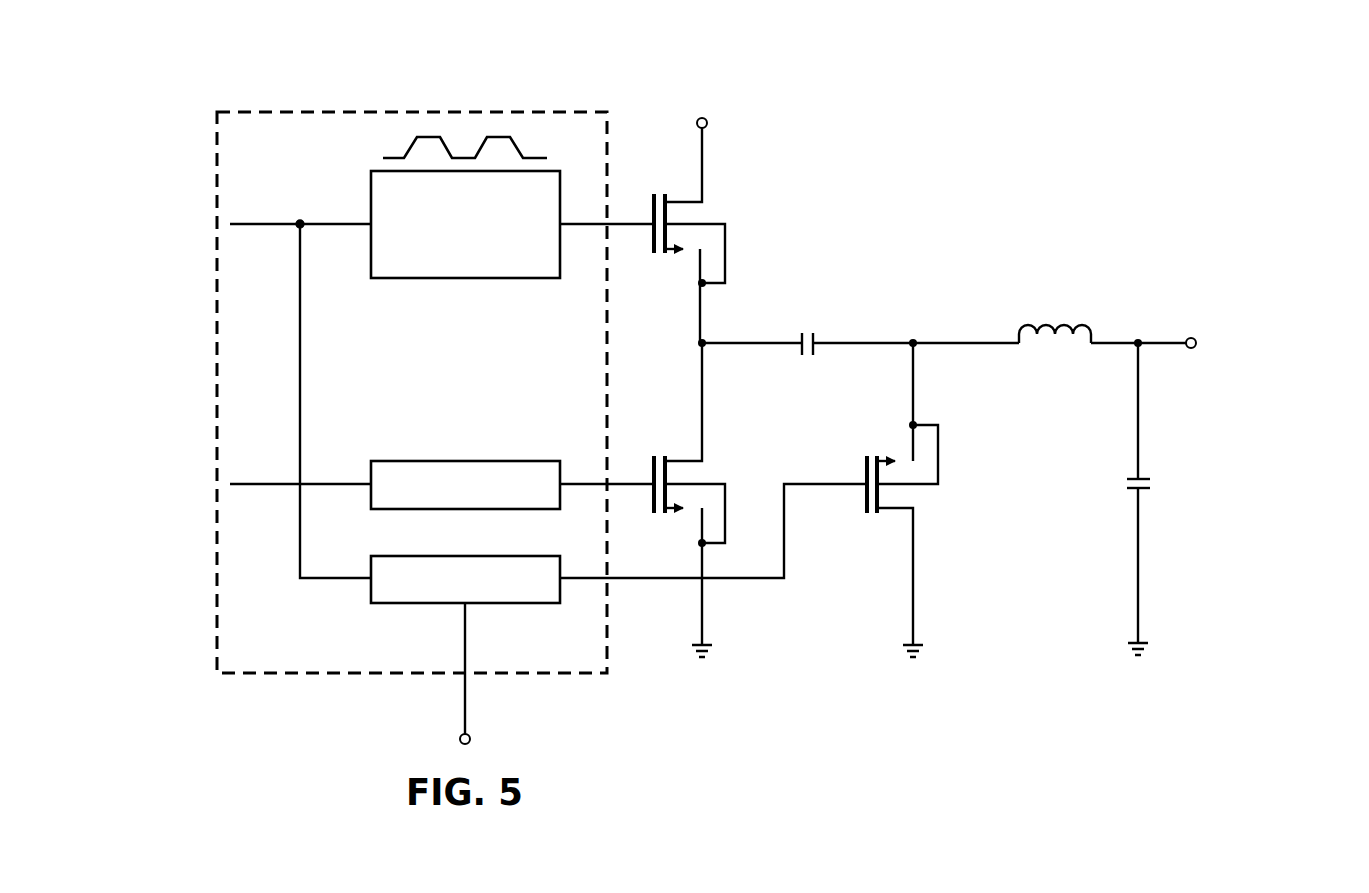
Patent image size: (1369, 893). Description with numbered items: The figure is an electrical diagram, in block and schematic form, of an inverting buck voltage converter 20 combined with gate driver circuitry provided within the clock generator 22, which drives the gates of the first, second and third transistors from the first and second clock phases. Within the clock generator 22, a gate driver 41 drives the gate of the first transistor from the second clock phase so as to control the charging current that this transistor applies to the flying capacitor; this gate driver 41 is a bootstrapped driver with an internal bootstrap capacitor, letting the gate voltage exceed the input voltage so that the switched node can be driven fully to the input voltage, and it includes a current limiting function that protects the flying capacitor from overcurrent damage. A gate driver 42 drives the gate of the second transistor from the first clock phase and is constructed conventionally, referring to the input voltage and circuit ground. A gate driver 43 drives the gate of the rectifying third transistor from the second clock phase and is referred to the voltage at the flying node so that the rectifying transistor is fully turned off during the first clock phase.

The converter 20 is at (1013, 137).
The clock generator 22 is at (368, 108).
The gate driver 41 is at (370, 200).
The gate driver 42 is at (462, 461).
The gate driver 43 is at (440, 605).